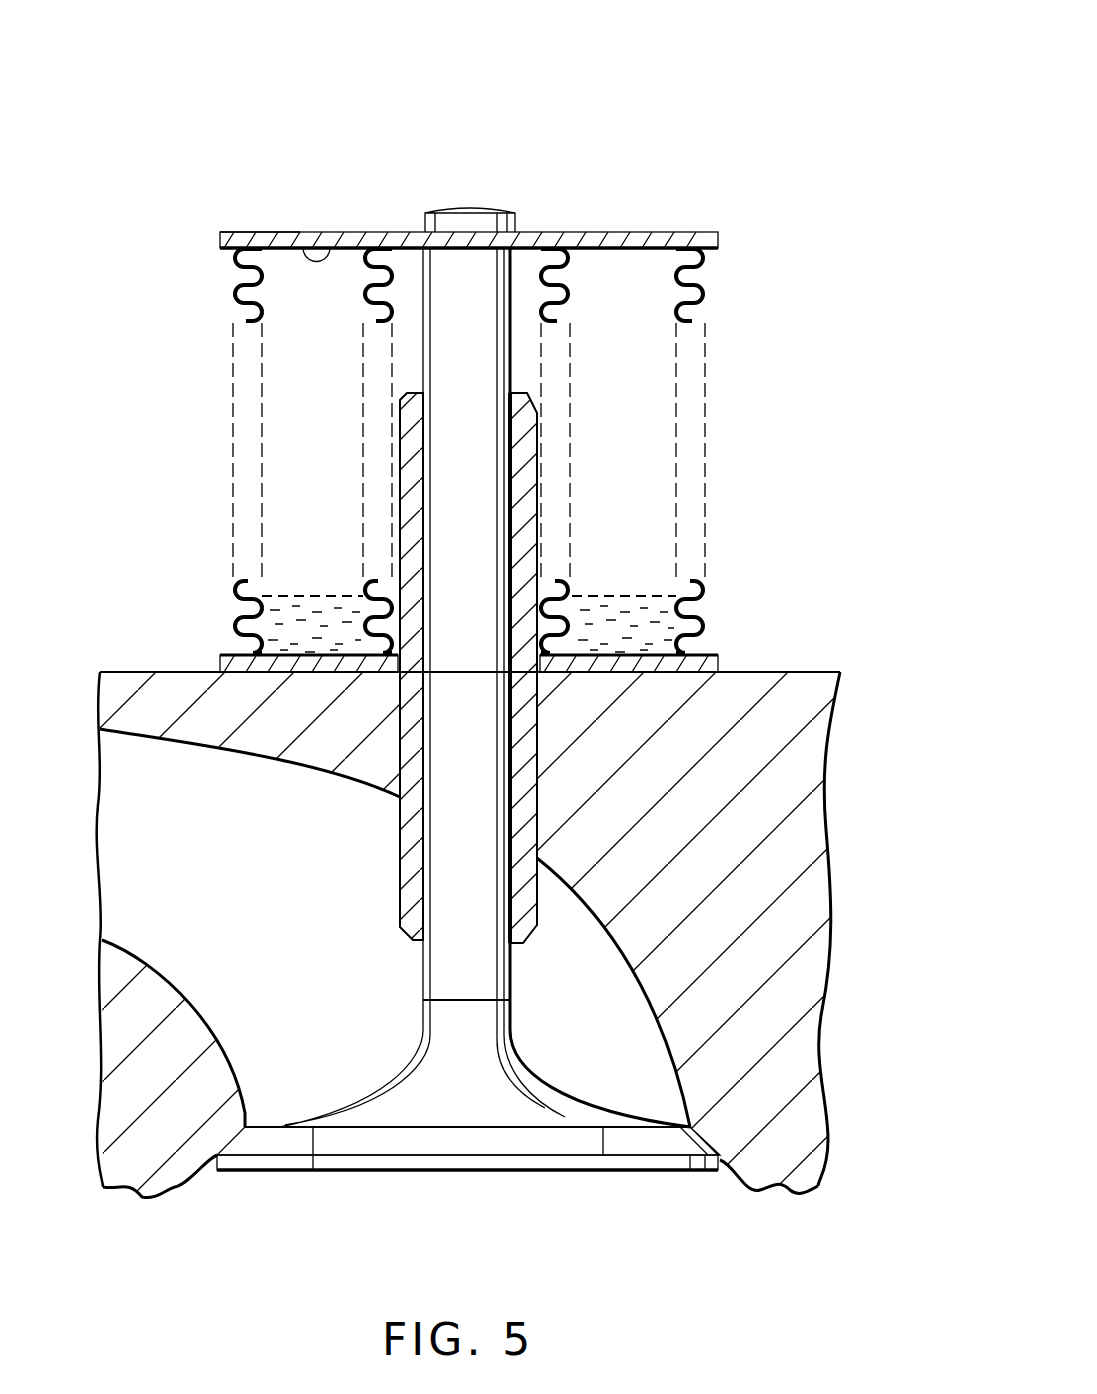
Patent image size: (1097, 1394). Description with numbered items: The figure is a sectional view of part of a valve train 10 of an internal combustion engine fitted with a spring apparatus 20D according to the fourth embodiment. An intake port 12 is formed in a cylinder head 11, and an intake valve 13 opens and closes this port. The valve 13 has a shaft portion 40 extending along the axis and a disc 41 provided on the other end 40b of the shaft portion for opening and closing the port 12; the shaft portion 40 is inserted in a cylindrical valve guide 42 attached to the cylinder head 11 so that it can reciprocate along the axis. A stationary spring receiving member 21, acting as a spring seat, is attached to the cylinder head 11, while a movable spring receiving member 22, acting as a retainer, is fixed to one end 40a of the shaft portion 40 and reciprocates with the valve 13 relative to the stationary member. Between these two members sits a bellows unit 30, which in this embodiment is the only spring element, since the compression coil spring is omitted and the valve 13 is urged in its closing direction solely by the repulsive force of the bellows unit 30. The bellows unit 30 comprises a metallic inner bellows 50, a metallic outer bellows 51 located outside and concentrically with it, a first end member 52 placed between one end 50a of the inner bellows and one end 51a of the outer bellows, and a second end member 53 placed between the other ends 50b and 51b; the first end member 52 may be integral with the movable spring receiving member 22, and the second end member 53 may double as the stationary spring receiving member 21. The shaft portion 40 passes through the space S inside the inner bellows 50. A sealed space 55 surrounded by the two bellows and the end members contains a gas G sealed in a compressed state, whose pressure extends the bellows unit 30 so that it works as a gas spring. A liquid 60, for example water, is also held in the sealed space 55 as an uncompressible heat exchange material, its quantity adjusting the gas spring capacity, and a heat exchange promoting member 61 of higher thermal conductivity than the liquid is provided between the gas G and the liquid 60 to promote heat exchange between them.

The valve train 10 is at (782, 103).
The cylinder head 11 is at (795, 910).
The intake port 12 is at (640, 1058).
The intake valve 13 is at (507, 1107).
The spring apparatus 20D is at (764, 418).
The stationary spring receiving member 21 is at (268, 660).
The movable spring receiving member 22 is at (260, 232).
The bellows unit 30 is at (213, 323).
The shaft portion 40 is at (423, 910).
The one end of the shaft portion 40a is at (466, 240).
The other end of the shaft portion 40b is at (425, 982).
The disc 41 is at (402, 1173).
The valve guide 42 is at (400, 775).
The inner bellows 50 is at (545, 315).
The one end of the inner bellows 50a is at (553, 233).
The other end of the inner bellows 50b is at (541, 676).
The outer bellows 51 is at (707, 318).
The one end of the outer bellows 51a is at (700, 233).
The other end of the outer bellows 51b is at (700, 680).
The first end member 52 is at (325, 247).
The second end member 53 is at (312, 650).
The sealed space 55 is at (305, 422).
The liquid 60 is at (640, 632).
The heat exchange promoting member 61 is at (635, 595).
The space S is at (410, 277).
The gas G is at (640, 468).